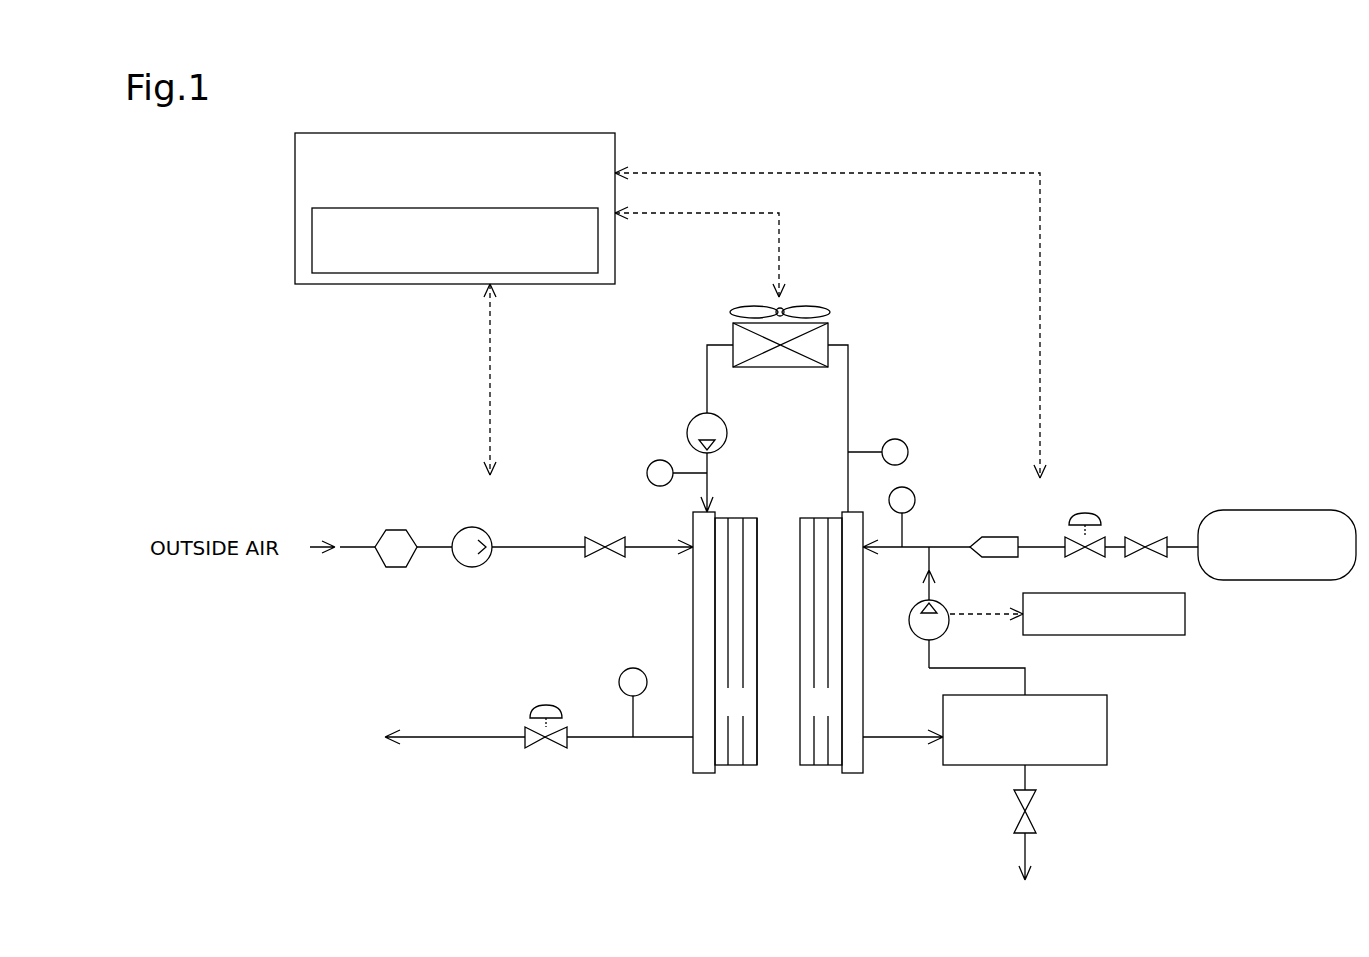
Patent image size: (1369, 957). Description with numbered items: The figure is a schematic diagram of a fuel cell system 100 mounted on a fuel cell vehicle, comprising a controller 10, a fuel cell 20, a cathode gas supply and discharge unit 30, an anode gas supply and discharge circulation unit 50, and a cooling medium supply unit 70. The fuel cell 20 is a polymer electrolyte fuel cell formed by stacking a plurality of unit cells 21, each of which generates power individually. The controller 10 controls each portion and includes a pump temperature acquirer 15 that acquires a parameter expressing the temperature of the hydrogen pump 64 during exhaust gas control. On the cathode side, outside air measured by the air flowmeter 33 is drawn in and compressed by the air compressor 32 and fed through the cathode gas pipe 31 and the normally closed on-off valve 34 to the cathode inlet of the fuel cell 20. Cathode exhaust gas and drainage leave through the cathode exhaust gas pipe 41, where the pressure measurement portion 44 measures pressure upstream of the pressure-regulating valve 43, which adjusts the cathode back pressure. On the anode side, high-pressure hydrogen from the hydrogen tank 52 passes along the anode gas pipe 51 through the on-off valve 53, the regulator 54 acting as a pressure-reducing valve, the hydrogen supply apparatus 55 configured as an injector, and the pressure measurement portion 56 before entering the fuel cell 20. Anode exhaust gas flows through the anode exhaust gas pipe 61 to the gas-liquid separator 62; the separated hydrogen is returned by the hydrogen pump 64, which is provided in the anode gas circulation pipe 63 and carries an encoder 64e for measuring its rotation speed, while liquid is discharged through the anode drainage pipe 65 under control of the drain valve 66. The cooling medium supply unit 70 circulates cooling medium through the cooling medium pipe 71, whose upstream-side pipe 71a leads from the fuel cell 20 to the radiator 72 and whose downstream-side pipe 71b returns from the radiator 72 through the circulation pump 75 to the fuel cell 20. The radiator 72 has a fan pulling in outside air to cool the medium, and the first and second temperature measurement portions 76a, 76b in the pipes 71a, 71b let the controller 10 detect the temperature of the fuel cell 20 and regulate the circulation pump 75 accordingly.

The controller 10 is at (532, 133).
The pump temperature acquirer 15 is at (530, 208).
The fuel cell system 100 is at (1122, 162).
The cooling medium supply unit 70 is at (826, 270).
The cooling medium pipe 71 is at (707, 345).
The upstream-side pipe 71a is at (848, 388).
The downstream-side pipe 71b is at (707, 378).
The radiator 72 is at (822, 320).
The circulation pump 75 is at (727, 436).
The first temperature measurement portion 76a is at (897, 438).
The second temperature measurement portion 76b is at (655, 460).
The fuel cell 20 is at (785, 818).
The unit cell 21 is at (735, 765).
The cathode gas supply and discharge unit 30 is at (333, 502).
The cathode gas pipe 31 is at (548, 547).
The air compressor 32 is at (486, 532).
The air flowmeter 33 is at (405, 530).
The on-off valve 34 is at (598, 540).
The cathode exhaust gas pipe 41 is at (440, 737).
The pressure-regulating valve 43 is at (541, 705).
The pressure measurement portion 44 is at (638, 668).
The anode gas supply and discharge circulation unit 50 is at (1117, 442).
The anode gas pipe 51 is at (955, 547).
The hydrogen tank 52 is at (1258, 510).
The on-off valve 53 is at (1135, 533).
The regulator 54 is at (1081, 513).
The hydrogen supply apparatus 55 is at (1000, 537).
The pressure measurement portion 56 is at (912, 490).
The anode exhaust gas pipe 61 is at (900, 737).
The gas-liquid separator 62 is at (1050, 695).
The anode gas circulation pipe 63 is at (975, 668).
The hydrogen pump 64 is at (943, 603).
The encoder 64e is at (1038, 593).
The anode drainage pipe 65 is at (1028, 850).
The drain valve 66 is at (1030, 815).